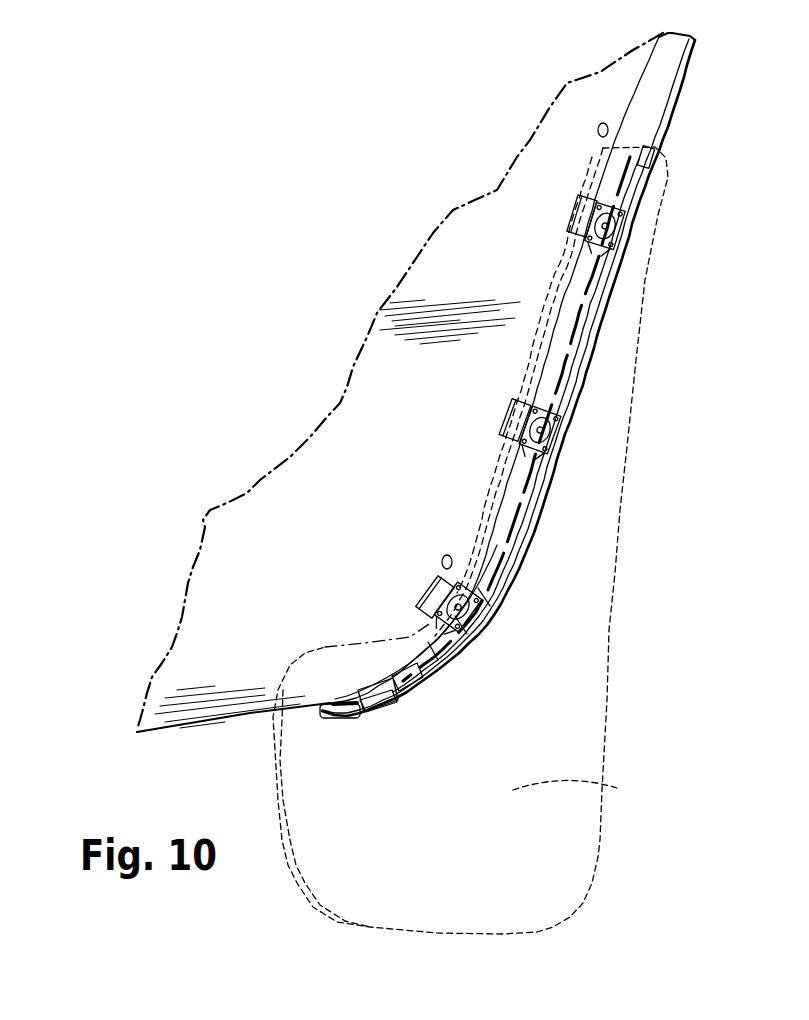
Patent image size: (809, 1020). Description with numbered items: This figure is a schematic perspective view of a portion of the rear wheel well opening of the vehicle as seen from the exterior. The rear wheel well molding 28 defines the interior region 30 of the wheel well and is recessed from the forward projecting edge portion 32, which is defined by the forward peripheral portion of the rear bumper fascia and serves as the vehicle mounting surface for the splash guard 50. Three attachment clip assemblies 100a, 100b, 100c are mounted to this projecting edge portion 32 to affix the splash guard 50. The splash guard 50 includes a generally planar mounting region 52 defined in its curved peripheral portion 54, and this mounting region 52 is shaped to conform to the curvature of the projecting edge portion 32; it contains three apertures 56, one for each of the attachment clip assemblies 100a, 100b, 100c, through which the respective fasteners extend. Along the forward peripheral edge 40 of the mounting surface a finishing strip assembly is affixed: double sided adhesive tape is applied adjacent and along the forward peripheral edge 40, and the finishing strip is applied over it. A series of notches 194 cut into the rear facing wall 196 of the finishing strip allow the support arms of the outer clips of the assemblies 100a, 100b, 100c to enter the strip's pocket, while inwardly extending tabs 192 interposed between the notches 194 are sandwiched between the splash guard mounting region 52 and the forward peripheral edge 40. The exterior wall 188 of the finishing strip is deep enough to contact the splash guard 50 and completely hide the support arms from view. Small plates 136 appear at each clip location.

The rear wheel well molding 28 is at (567, 150).
The interior region 30 is at (246, 672).
The forward projecting edge portion 32 is at (673, 90).
The forward peripheral edge 40 is at (665, 118).
The splash guard 50 is at (470, 540).
The splash guard mounting region 52 is at (500, 480).
The curved peripheral portion 54 is at (480, 522).
The apertures 56 is at (573, 208).
The attachment clip assembly 100a is at (655, 229).
The attachment clip assembly 100b is at (587, 449).
The attachment clip assembly 100c is at (495, 656).
The clip plate 136 is at (572, 233).
The exterior wall 188 is at (347, 722).
The inwardly extending tabs 192 is at (513, 545).
The notches 194 is at (578, 372).
The rear facing wall 196 is at (384, 714).